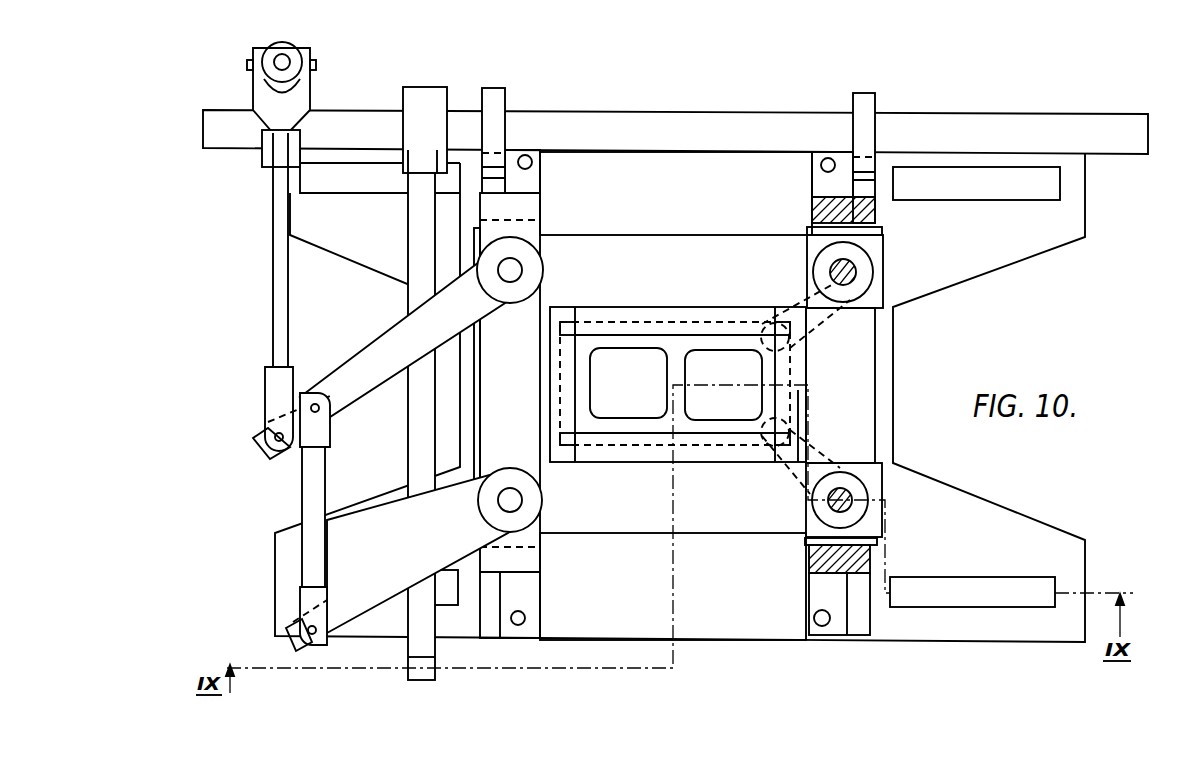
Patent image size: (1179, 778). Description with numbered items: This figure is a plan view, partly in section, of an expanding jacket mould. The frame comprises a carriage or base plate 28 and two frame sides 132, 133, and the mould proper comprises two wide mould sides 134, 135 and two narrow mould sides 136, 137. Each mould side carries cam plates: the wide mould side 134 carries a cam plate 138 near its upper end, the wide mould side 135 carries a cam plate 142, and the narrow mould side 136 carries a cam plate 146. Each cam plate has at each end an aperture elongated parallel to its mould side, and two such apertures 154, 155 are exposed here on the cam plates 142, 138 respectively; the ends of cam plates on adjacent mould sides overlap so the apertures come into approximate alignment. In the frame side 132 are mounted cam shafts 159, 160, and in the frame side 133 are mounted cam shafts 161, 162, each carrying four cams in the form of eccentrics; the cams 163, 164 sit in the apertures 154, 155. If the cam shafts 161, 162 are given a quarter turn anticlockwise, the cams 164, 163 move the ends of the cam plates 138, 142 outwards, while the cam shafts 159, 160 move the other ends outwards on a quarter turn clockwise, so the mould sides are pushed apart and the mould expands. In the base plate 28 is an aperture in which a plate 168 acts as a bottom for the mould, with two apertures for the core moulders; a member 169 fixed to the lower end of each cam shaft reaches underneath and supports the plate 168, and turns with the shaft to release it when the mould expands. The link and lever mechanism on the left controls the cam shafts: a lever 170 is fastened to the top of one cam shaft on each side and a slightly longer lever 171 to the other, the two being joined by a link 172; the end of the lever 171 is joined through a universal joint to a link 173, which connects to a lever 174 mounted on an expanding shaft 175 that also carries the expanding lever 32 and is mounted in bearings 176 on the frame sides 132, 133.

The carriage or base plate 28 is at (1030, 245).
The expanding lever 32 is at (412, 455).
The frame side 132 is at (522, 205).
The frame side 133 is at (868, 209).
The wide mould side 134 is at (598, 452).
The wide mould side 135 is at (683, 316).
The narrow mould side 136 is at (793, 358).
The narrow mould side 137 is at (667, 384).
The cam plate 138 is at (705, 520).
The cam plate 142 is at (676, 193).
The cam plate 146 is at (860, 378).
The aperture 154 is at (822, 260).
The aperture 155 is at (870, 500).
The cam shaft 159 is at (497, 502).
The cam shaft 160 is at (512, 272).
The cam shaft 161 is at (852, 498).
The cam shaft 162 is at (829, 272).
The cam 163 is at (832, 271).
The cam 164 is at (853, 491).
The plate 168 is at (677, 361).
The member 169 is at (817, 322).
The lever 170 is at (388, 571).
The lever 171 is at (352, 383).
The link 172 is at (270, 413).
The link 173 is at (280, 302).
The lever 174 is at (286, 62).
The expanding shaft 175 is at (692, 122).
The bearing 176 is at (497, 109).